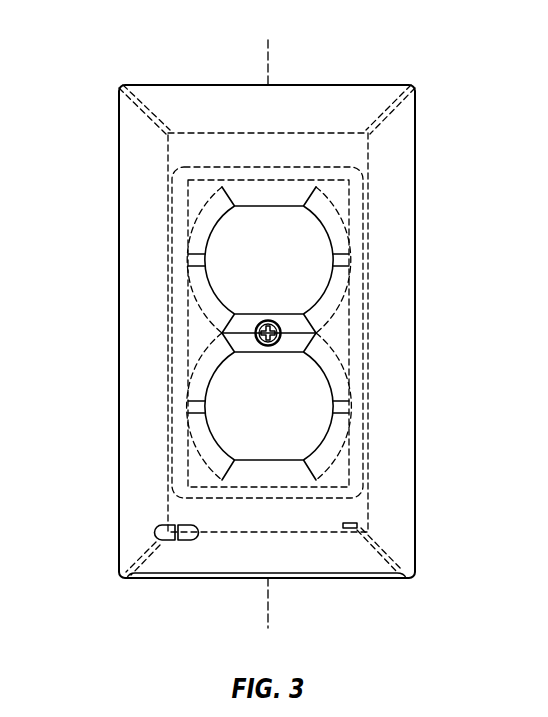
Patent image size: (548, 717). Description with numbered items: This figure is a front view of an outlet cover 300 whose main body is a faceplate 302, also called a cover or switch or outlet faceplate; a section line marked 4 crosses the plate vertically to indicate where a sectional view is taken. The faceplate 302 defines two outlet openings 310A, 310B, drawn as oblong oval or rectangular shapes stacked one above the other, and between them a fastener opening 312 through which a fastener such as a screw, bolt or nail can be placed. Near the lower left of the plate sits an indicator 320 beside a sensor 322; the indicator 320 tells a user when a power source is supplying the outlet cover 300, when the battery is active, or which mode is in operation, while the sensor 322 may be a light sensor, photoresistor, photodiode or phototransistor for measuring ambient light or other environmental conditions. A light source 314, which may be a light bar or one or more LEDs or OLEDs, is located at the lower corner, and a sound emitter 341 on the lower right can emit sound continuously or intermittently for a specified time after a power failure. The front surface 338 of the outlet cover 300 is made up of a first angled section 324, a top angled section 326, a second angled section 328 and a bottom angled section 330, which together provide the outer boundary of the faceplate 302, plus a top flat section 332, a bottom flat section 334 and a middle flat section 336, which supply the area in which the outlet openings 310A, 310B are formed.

The outlet cover 300 is at (135, 38).
The faceplate 302 is at (205, 85).
The section line 4- 4 is at (268, 40).
The outlet opening 310A is at (243, 272).
The outlet opening 310B is at (243, 417).
The fastener opening 312 is at (271, 322).
The light source 314 is at (168, 580).
The indicator 320 is at (165, 524).
The sensor 322 is at (187, 544).
The first angled section 324 is at (409, 221).
The top angled section 326 is at (368, 99).
The second angled section 328 is at (139, 166).
The bottom angled section 330 is at (295, 553).
The top flat section 332 is at (351, 152).
The bottom flat section 334 is at (353, 512).
The middle flat section 336 is at (333, 332).
The front surface 338 is at (419, 378).
The sound emitter 341 is at (358, 525).